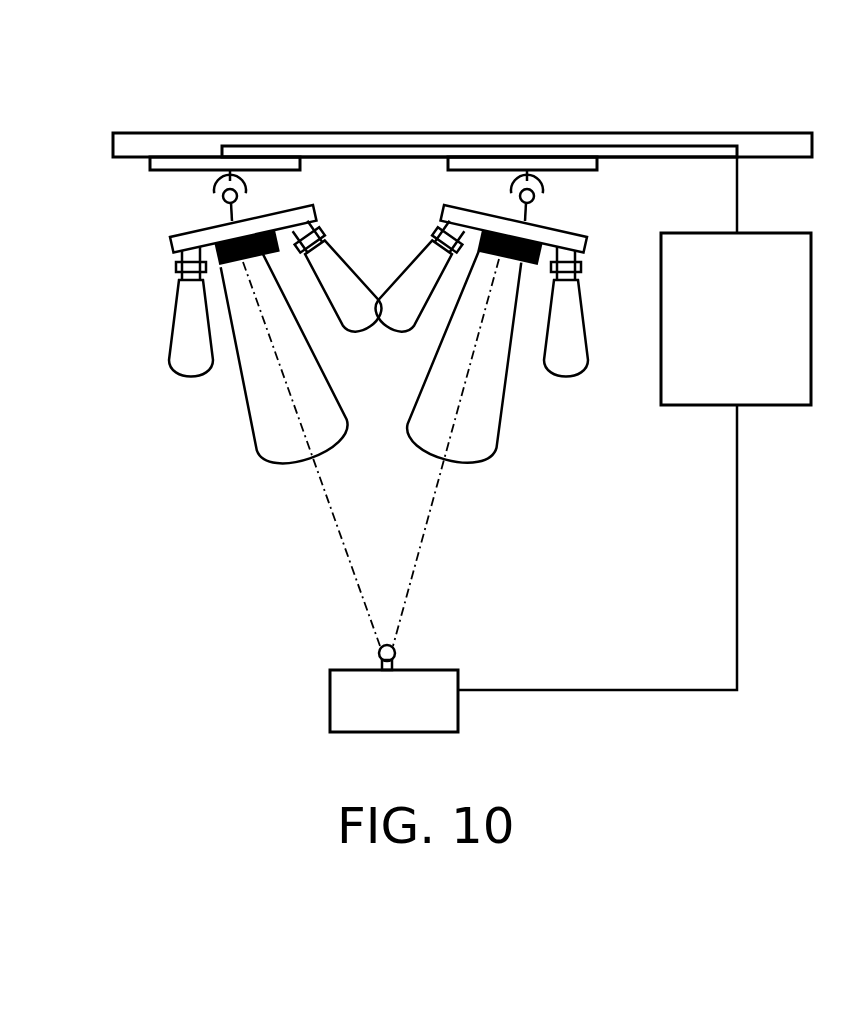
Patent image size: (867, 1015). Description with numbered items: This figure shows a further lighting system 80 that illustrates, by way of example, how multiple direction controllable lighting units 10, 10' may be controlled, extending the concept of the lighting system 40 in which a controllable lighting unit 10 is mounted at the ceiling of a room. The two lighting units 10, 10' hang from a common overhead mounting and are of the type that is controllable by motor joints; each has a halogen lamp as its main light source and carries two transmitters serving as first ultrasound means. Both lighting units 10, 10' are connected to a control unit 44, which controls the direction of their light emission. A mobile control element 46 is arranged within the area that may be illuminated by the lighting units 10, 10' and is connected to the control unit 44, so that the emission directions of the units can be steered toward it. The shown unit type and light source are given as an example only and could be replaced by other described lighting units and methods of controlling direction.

The lighting system 80 is at (698, 78).
The lighting system 40 is at (204, 322).
The controllable lighting unit 10 is at (238, 222).
The direction controllable lighting unit 10' is at (495, 321).
The control unit 44 is at (752, 332).
The mobile control element 46 is at (330, 709).